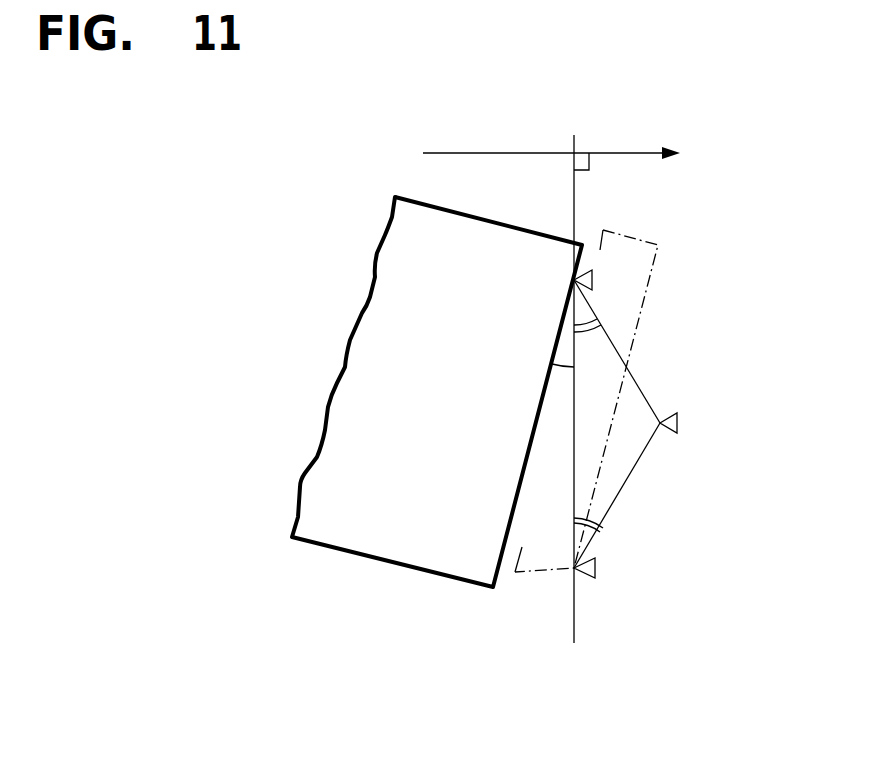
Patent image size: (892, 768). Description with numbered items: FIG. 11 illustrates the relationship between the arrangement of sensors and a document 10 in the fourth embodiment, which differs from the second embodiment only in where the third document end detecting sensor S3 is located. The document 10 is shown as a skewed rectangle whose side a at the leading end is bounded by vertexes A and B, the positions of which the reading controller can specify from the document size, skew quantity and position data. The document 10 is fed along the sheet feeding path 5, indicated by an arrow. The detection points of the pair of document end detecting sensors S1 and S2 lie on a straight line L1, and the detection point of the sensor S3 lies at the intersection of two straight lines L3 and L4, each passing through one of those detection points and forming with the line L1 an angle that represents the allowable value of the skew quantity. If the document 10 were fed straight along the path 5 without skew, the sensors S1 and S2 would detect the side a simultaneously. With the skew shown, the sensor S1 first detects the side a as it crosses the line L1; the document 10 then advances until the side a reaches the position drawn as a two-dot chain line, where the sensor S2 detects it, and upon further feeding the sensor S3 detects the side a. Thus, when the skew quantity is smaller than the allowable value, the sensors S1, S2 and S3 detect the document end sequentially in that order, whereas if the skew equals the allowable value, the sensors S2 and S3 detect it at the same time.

The sheet feeding path 5 is at (620, 150).
The document 10 is at (342, 538).
The vertex A is at (584, 250).
The vertex B is at (495, 590).
The document end detecting sensor S1 is at (592, 283).
The document end detecting sensor S2 is at (595, 568).
The third document end detecting sensor S3 is at (677, 423).
The straight line L1 is at (578, 627).
The straight line L3 is at (645, 397).
The straight line L4 is at (640, 458).
The side at the leading end a is at (630, 350).